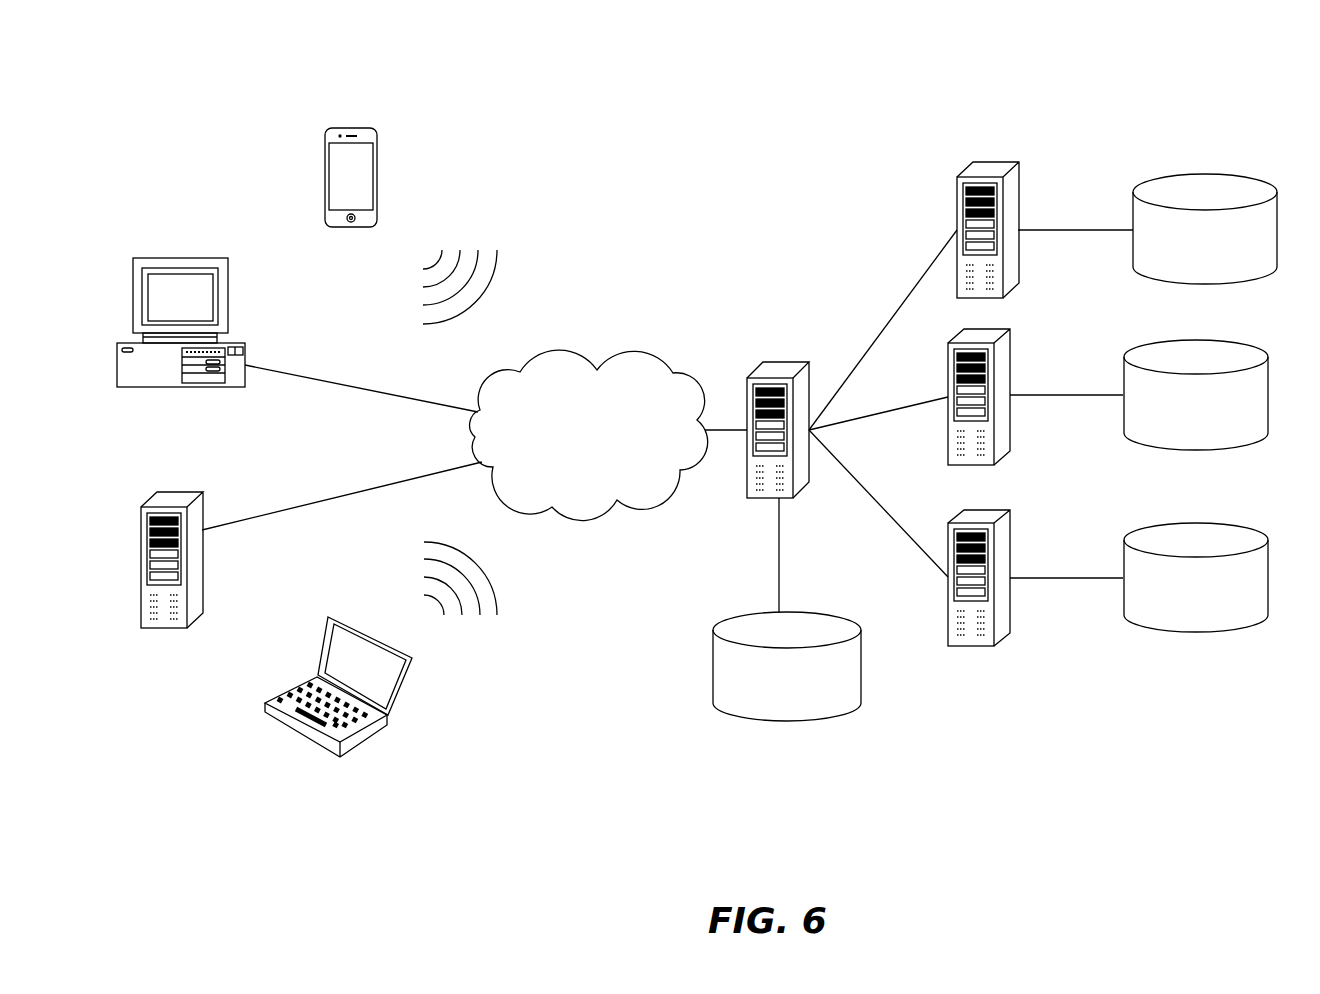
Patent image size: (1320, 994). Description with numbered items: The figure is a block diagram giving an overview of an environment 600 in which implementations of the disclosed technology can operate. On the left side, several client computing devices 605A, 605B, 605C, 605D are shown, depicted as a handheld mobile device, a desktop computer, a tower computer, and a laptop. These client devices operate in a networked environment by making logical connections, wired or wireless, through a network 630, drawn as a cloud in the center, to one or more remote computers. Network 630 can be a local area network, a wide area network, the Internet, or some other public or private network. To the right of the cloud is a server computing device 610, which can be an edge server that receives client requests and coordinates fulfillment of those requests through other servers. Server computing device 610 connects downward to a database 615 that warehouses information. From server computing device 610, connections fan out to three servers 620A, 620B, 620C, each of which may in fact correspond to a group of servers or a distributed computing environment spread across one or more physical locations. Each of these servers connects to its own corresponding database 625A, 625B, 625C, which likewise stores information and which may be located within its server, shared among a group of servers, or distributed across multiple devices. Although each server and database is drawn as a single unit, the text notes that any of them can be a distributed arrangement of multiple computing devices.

The environment 600 is at (841, 86).
The client computing device 605A is at (367, 128).
The client computing device 605B is at (222, 258).
The client computing device 605C is at (192, 492).
The client computing device 605D is at (403, 690).
The server computing device 610 is at (788, 360).
The database 615 is at (837, 613).
The server 620A is at (1020, 162).
The server 620B is at (1010, 330).
The server 620C is at (1010, 510).
The database 625A is at (1202, 171).
The database 625B is at (1193, 339).
The database 625C is at (1193, 521).
The network 630 is at (645, 353).